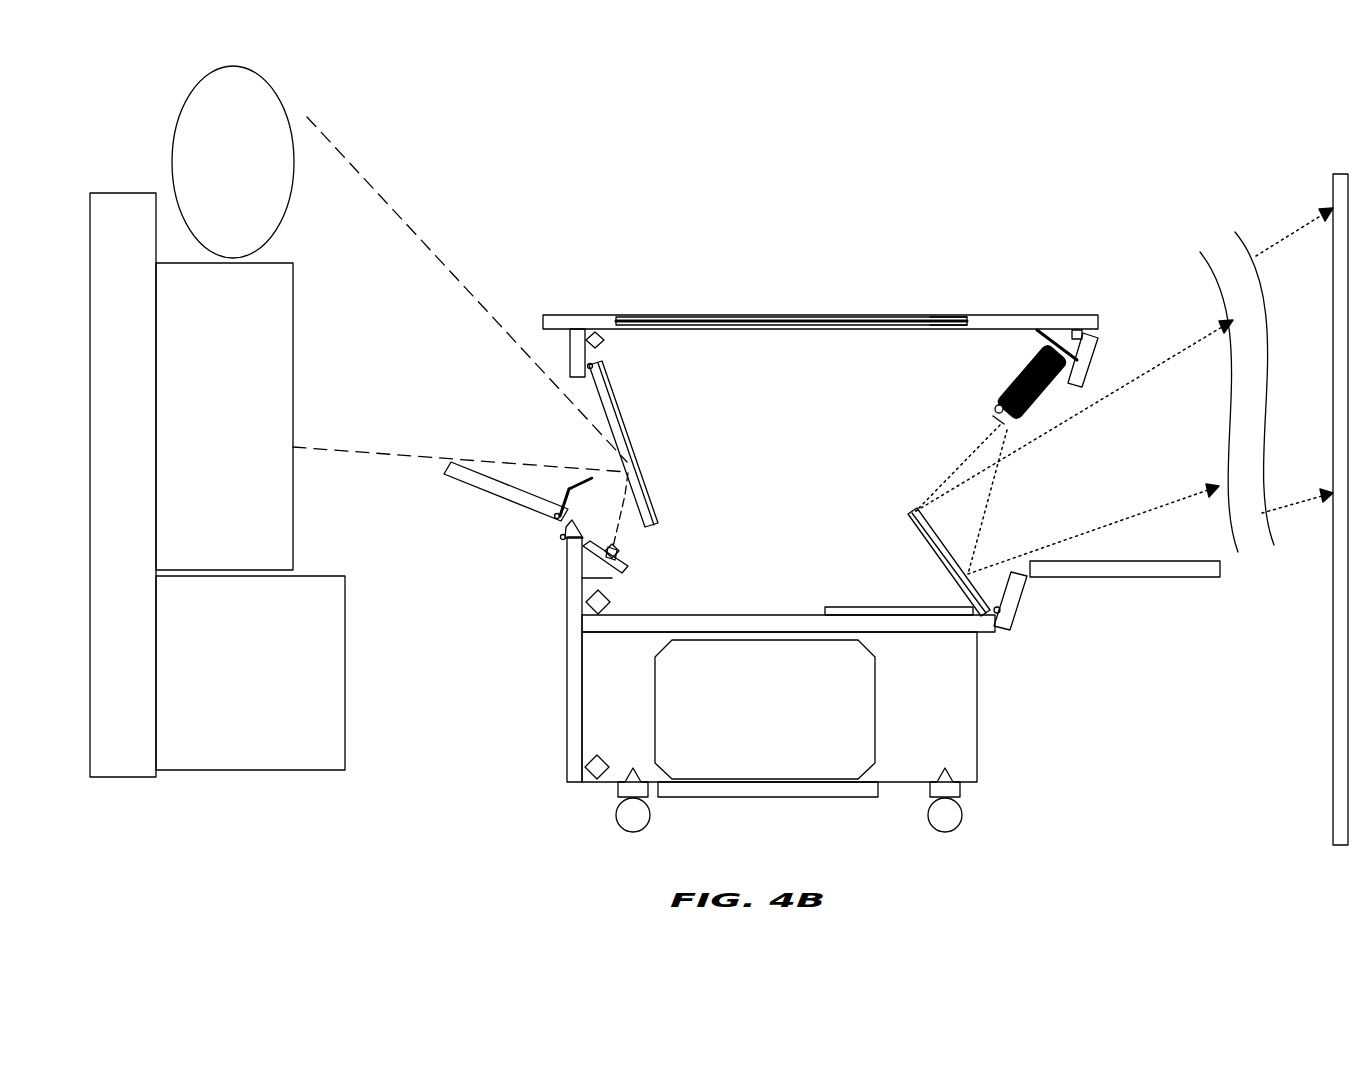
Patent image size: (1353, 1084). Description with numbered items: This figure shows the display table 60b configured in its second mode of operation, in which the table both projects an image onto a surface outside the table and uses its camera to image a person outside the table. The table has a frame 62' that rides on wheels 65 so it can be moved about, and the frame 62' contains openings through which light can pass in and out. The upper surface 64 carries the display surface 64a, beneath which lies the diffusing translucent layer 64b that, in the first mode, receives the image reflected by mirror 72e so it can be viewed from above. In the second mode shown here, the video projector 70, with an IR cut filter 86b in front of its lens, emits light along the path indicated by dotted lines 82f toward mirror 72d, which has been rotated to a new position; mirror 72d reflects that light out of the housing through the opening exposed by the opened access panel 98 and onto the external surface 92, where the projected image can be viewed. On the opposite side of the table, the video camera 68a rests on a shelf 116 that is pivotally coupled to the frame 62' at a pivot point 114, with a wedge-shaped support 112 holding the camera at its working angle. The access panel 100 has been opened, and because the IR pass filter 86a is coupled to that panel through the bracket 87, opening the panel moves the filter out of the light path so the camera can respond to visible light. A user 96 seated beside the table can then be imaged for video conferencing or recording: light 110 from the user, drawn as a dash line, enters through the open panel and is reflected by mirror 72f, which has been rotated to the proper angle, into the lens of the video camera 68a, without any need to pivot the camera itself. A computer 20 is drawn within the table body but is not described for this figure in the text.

The computer 20 is at (876, 715).
The display table 60b is at (480, 786).
The frame 62' is at (753, 693).
The upper surface 64 is at (588, 315).
The display surface 64a is at (680, 317).
The diffusing translucent layer 64b is at (923, 323).
The wheels 65 is at (614, 820).
The video camera 68a is at (613, 560).
The video projector 70 is at (1032, 353).
The mirror 72d is at (945, 560).
The mirror 72e is at (873, 615).
The mirror 72f is at (627, 417).
The dotted lines 82f is at (1163, 361).
The IR pass filter 86a is at (578, 483).
The IR cut filter 86b is at (995, 407).
The bracket 87 is at (574, 494).
The external surface 92 is at (1333, 178).
The user 96 is at (297, 347).
The access panel 98 is at (1102, 578).
The access panel 100 is at (512, 511).
The light 110 is at (437, 255).
The wedge-shaped support 112 is at (583, 578).
The pivot point 114 is at (566, 577).
The shelf 116 is at (624, 578).